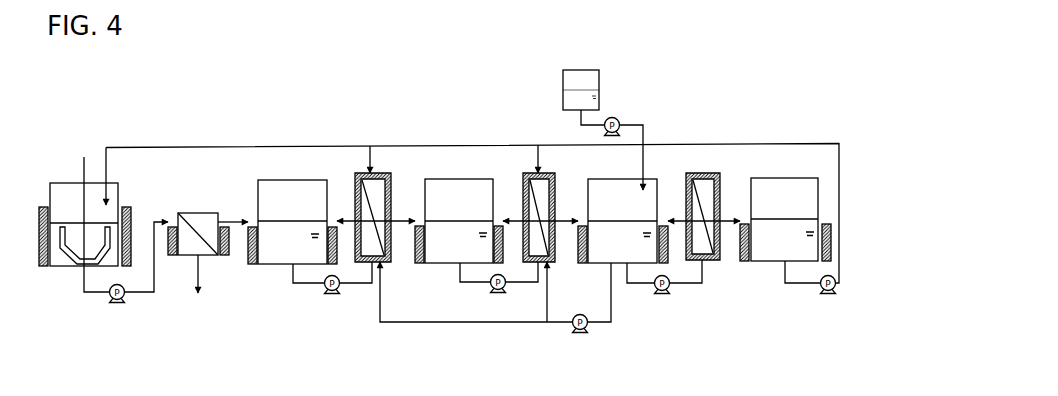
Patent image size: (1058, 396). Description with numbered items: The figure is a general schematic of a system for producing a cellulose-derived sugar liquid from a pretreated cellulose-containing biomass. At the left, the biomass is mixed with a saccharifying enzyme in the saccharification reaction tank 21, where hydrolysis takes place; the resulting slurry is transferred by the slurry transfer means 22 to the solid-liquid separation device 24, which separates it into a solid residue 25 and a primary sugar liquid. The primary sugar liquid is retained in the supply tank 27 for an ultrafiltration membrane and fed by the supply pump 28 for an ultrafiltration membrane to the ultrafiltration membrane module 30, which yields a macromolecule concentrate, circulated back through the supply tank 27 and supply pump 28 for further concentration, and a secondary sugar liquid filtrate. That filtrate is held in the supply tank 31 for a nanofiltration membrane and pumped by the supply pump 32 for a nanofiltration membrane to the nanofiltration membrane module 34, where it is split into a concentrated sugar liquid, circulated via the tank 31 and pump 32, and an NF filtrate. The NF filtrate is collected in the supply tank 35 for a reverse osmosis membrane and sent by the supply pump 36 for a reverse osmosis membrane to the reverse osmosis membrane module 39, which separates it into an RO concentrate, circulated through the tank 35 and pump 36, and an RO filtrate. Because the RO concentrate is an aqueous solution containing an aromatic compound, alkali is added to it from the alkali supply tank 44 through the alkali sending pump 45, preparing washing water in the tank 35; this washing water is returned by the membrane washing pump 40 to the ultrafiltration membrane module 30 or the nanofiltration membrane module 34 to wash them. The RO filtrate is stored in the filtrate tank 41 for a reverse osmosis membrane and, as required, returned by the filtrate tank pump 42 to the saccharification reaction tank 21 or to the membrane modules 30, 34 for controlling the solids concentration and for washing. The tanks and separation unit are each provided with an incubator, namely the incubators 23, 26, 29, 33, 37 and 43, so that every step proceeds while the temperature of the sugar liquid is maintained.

The saccharification reaction tank 21 is at (68, 266).
The slurry transfer means 22 is at (117, 303).
The incubator 23 is at (41, 207).
The solid-liquid separation device 24 is at (190, 213).
The solid residue 25 is at (199, 288).
The incubator 26 is at (172, 258).
The supply tank for an ultrafiltration membrane 27 is at (292, 222).
The supply pump for an ultrafiltration membrane 28 is at (332, 298).
The incubator 29 is at (252, 266).
The ultrafiltration membrane module 30 is at (385, 188).
The supply tank for a nanofiltration membrane 31 is at (459, 221).
The supply pump for a nanofiltration membrane 32 is at (490, 291).
The incubator 33 is at (421, 265).
The nanofiltration membrane module 34 is at (549, 188).
The supply tank for a reverse osmosis membrane 35 is at (622, 221).
The supply pump for a reverse osmosis membrane 36 is at (665, 299).
The incubator 37 is at (580, 265).
The reverse osmosis membrane module 39 is at (714, 186).
The membrane washing pump 40 is at (566, 330).
The filtrate tank for a reverse osmosis membrane 41 is at (784, 219).
The filtrate tank pump for a reverse osmosis membrane 42 is at (828, 299).
The incubator 43 is at (746, 264).
The alkali supply tank 44 is at (563, 98).
The alkali sending pump 45 is at (620, 118).